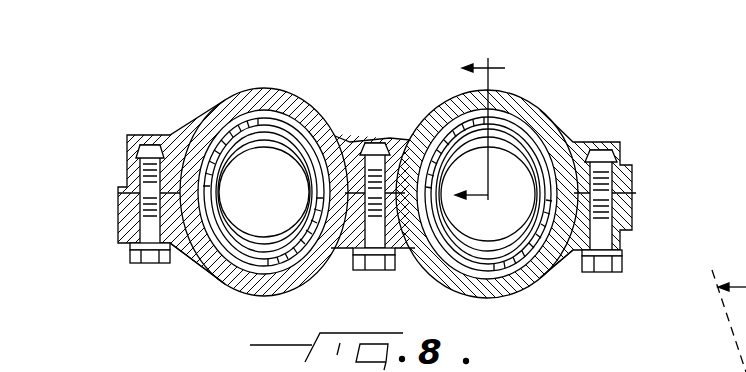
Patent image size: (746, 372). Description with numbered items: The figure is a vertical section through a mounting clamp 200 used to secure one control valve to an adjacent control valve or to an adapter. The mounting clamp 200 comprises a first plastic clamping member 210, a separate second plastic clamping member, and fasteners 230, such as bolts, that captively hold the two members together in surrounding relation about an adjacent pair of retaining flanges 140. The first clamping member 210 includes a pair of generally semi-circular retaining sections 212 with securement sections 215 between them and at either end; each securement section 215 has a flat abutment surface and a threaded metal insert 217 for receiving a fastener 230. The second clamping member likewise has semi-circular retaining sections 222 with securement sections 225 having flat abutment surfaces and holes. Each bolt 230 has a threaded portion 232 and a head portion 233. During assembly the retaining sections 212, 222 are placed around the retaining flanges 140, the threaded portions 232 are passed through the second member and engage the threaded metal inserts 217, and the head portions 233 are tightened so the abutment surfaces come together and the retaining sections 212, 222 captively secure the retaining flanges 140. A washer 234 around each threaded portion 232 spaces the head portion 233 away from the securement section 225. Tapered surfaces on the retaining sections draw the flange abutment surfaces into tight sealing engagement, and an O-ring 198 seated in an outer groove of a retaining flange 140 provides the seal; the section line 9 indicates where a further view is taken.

The mounting clamp 200 is at (213, 90).
The semi-circular retaining section 212 is at (238, 88).
The first plastic clamping member 210 is at (574, 105).
The O-ring 198 is at (278, 113).
The securement section 215 is at (123, 182).
The threaded metal insert 217 is at (165, 100).
The threaded portion 232 is at (140, 163).
The securement section 225 is at (127, 200).
The washer 234 is at (133, 248).
The head portion 233 is at (147, 266).
The fastener 230 is at (152, 272).
The semi-circular retaining section 222 is at (222, 286).
The retaining flange 140 is at (248, 286).
The section line 9- 9 is at (497, 144).